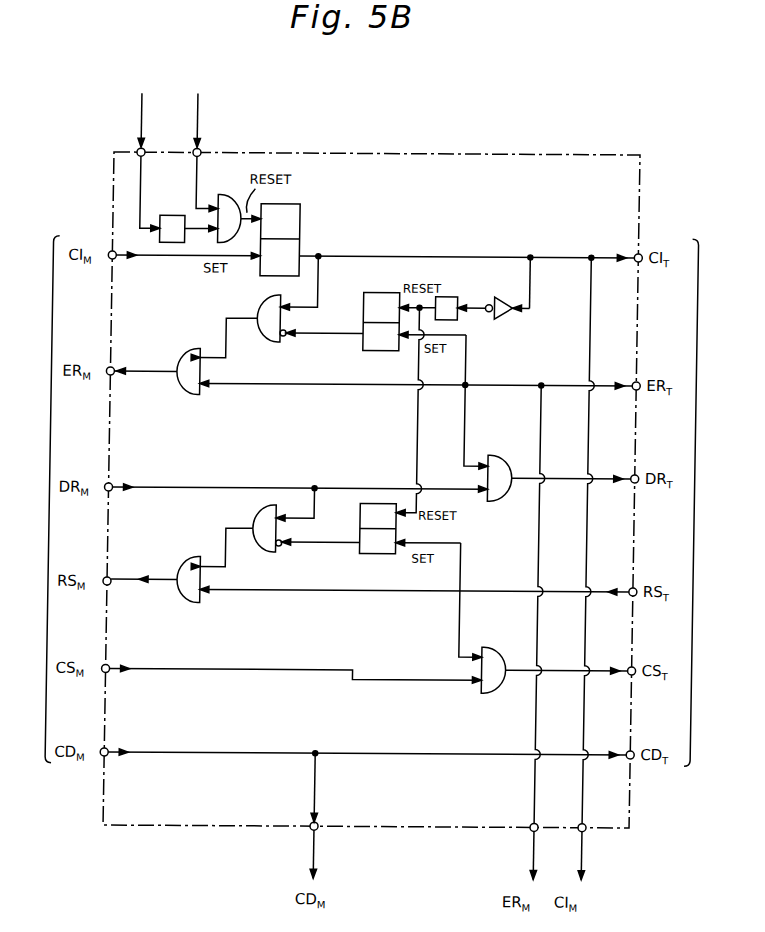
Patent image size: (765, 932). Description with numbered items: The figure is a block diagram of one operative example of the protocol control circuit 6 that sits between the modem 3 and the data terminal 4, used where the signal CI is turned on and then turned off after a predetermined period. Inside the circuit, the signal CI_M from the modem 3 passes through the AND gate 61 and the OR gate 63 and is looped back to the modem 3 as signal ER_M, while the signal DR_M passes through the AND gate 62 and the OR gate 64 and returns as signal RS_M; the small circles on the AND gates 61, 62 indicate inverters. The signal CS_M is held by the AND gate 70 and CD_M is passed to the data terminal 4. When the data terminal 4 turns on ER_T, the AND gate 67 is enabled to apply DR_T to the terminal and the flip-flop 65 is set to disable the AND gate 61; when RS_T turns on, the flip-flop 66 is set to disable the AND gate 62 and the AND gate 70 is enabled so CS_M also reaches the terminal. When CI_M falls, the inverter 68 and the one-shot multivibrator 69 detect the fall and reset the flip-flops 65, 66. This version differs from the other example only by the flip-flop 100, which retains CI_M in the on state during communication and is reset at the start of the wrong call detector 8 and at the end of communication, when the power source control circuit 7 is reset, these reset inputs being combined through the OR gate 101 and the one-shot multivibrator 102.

The modem 3 is at (39, 499).
The data terminal 4 is at (708, 502).
The protocol control circuit 6 is at (494, 153).
The power source control circuit 7 is at (196, 96).
The wrong call detector 8 is at (140, 96).
The AND gate 61 is at (265, 343).
The AND gate 62 is at (263, 552).
The OR gate 63 is at (190, 395).
The OR gate 64 is at (190, 603).
The flip-flop 65 is at (364, 298).
The flip-flop 66 is at (368, 553).
The AND gate 67 is at (495, 452).
The inverter 68 is at (502, 320).
The one-shot multivibrator 69 is at (470, 242).
The AND gate 70 is at (489, 645).
The flip-flop 100 is at (304, 218).
The OR gate 101 is at (223, 192).
The one-shot multivibrator 102 is at (166, 214).